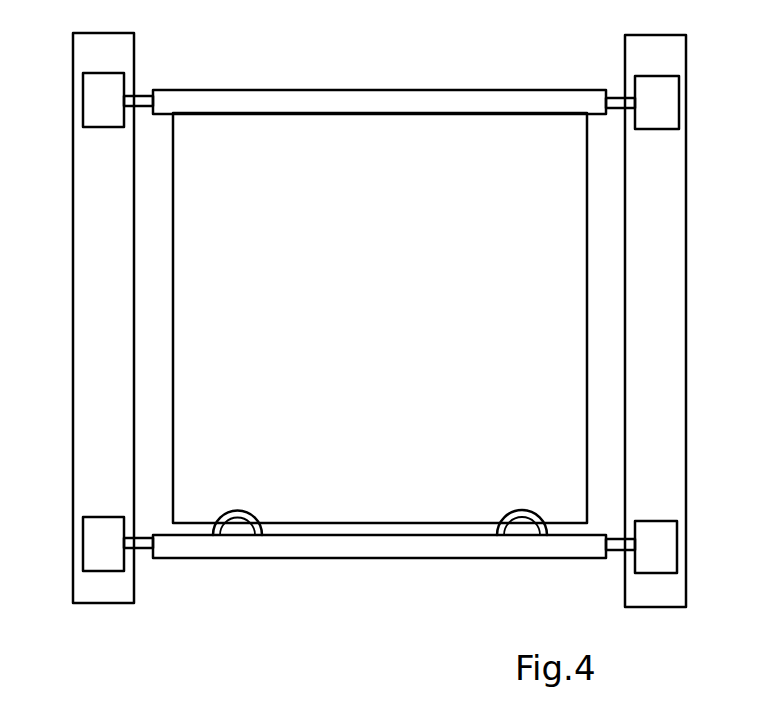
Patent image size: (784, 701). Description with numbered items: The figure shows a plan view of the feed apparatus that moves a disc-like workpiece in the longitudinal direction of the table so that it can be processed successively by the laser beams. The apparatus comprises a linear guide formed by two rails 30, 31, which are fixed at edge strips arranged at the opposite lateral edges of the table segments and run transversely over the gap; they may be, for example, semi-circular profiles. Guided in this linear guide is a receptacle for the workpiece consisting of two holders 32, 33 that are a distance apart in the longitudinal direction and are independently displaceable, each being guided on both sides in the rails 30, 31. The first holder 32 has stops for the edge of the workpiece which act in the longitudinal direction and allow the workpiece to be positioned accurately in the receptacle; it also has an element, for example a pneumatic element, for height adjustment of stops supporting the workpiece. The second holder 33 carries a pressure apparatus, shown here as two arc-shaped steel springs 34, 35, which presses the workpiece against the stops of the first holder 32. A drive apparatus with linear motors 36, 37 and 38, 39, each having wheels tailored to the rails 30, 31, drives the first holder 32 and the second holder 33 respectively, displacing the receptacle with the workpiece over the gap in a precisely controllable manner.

The rail 30 is at (118, 51).
The rail 31 is at (668, 55).
The first holder 32 is at (388, 103).
The second holder 33 is at (377, 543).
The arc-shaped steel spring 34 is at (230, 528).
The arc-shaped steel spring 35 is at (513, 528).
The linear motor 36 is at (95, 99).
The linear motor 37 is at (663, 103).
The linear motor 38 is at (97, 543).
The linear motor 39 is at (662, 545).